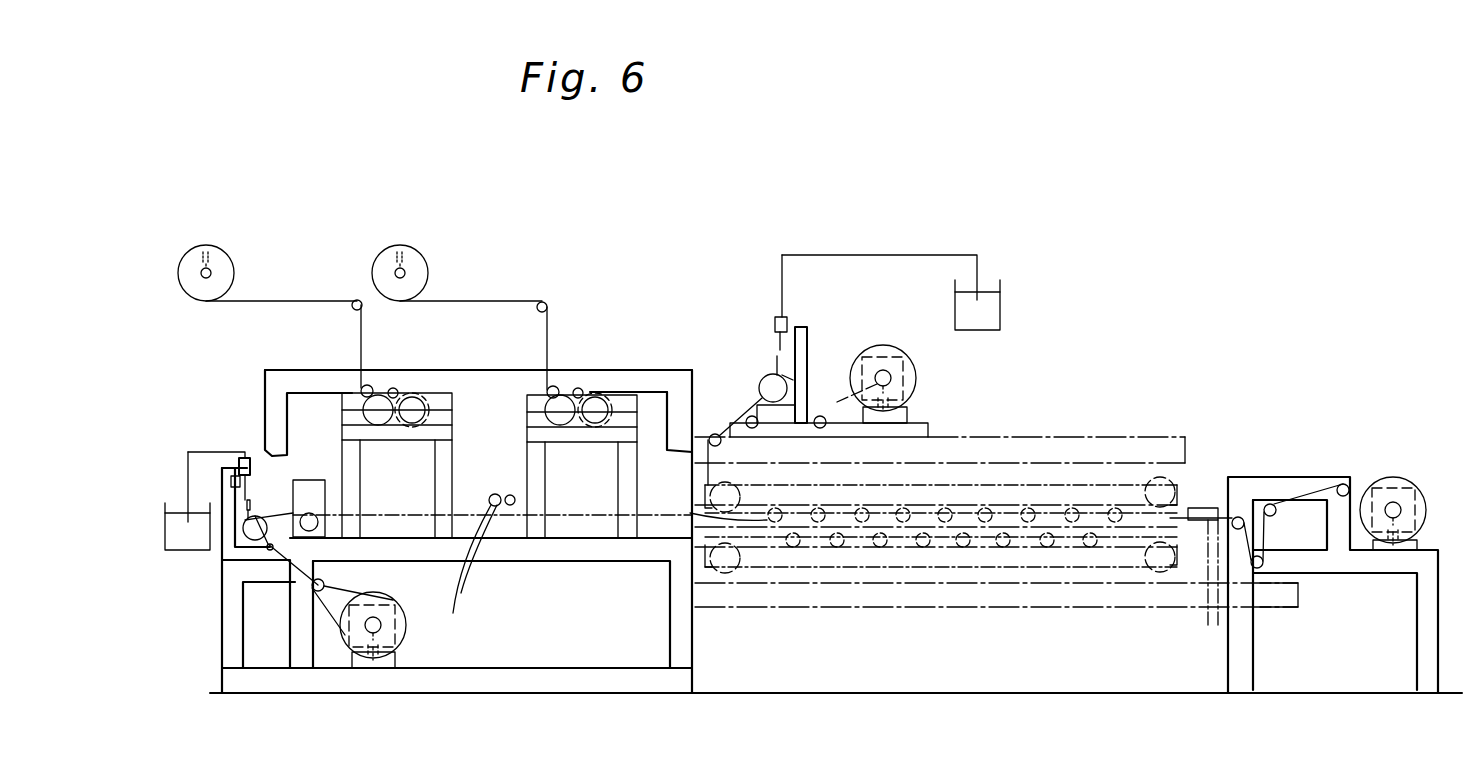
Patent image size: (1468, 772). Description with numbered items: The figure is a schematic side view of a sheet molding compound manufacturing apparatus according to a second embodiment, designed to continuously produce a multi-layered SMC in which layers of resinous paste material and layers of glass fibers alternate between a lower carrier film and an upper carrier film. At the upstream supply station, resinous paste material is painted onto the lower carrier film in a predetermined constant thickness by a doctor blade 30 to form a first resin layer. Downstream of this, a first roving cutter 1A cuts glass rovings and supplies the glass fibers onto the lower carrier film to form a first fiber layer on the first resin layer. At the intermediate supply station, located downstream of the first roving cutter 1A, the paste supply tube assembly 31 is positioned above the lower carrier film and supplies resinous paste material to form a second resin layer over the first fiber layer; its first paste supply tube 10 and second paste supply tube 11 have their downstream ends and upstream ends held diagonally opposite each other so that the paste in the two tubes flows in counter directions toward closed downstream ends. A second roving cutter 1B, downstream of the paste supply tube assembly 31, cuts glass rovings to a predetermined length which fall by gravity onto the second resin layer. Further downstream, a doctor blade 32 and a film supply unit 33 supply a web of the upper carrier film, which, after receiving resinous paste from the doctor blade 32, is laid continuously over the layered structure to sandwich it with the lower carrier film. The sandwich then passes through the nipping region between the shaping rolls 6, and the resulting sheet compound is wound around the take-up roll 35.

The first roving cutter 1A is at (403, 387).
The second roving cutter 1B is at (590, 380).
The doctor blade 30 is at (239, 470).
The first paste supply tube 10 is at (490, 499).
The second paste supply tube 11 is at (506, 498).
The paste supply tube assembly 31 is at (510, 506).
The doctor blade 32 is at (795, 339).
The film supply unit 33 is at (843, 365).
The shaping rolls 6 is at (812, 525).
The take-up roll 35 is at (1427, 507).